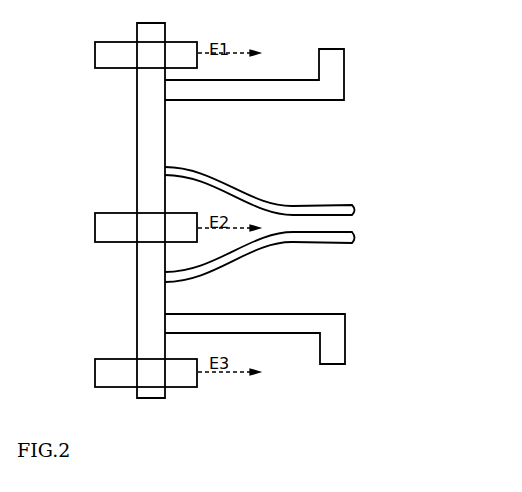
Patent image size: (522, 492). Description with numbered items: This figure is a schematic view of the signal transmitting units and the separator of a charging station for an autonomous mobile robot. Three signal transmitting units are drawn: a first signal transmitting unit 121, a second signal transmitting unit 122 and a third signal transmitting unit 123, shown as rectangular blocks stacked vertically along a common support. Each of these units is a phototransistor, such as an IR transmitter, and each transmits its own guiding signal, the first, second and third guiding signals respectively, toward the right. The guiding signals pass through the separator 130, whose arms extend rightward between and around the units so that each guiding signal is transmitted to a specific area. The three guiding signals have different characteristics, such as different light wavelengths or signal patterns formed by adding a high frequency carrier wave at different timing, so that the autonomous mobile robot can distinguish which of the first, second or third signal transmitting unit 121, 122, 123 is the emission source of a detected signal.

The first signal transmitting unit 121 is at (105, 55).
The second signal transmitting unit 122 is at (105, 228).
The third signal transmitting unit 123 is at (105, 375).
The separator 130 is at (370, 58).